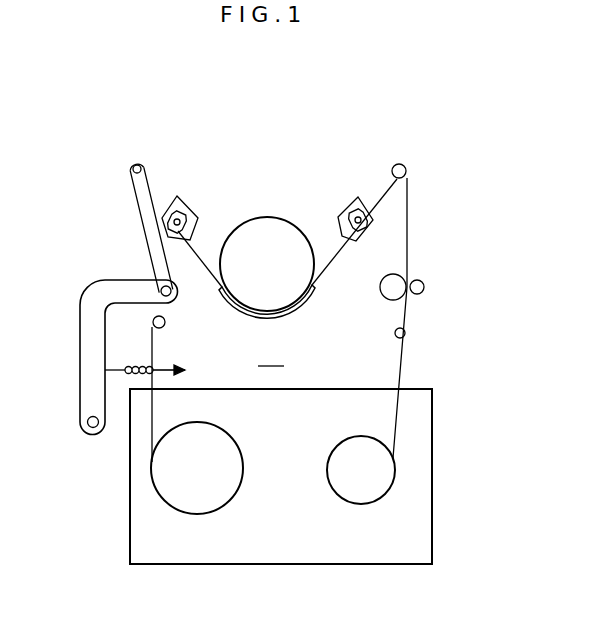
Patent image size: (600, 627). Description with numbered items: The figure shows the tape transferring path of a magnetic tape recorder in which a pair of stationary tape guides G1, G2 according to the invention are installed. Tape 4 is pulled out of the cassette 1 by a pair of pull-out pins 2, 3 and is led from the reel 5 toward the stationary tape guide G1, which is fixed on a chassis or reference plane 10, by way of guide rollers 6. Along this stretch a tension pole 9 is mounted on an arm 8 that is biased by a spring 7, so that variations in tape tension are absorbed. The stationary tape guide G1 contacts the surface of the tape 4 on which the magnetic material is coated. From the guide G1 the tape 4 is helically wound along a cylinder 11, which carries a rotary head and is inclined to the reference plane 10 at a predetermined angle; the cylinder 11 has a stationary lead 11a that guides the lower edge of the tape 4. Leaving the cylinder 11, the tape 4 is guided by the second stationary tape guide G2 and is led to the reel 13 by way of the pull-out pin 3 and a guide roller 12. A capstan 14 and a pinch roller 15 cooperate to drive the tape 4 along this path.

The cassette 1 is at (258, 552).
The pull-out pin 2 is at (133, 163).
The pull-out pin 3 is at (405, 167).
The tape 4 is at (153, 433).
The reel 5 is at (172, 493).
The guide rollers 6 is at (165, 322).
The spring 7 is at (160, 360).
The arm 8 is at (88, 348).
The tension pole 9 is at (158, 285).
The reference plane 10 is at (272, 354).
The cylinder 11 is at (268, 222).
The stationary lead 11a is at (280, 313).
The guide roller 12 is at (395, 337).
The reel 13 is at (375, 483).
The capstan 14 is at (424, 287).
The pinch roller 15 is at (380, 287).
The stationary tape guide G1 is at (181, 205).
The stationary tape guide G2 is at (355, 200).